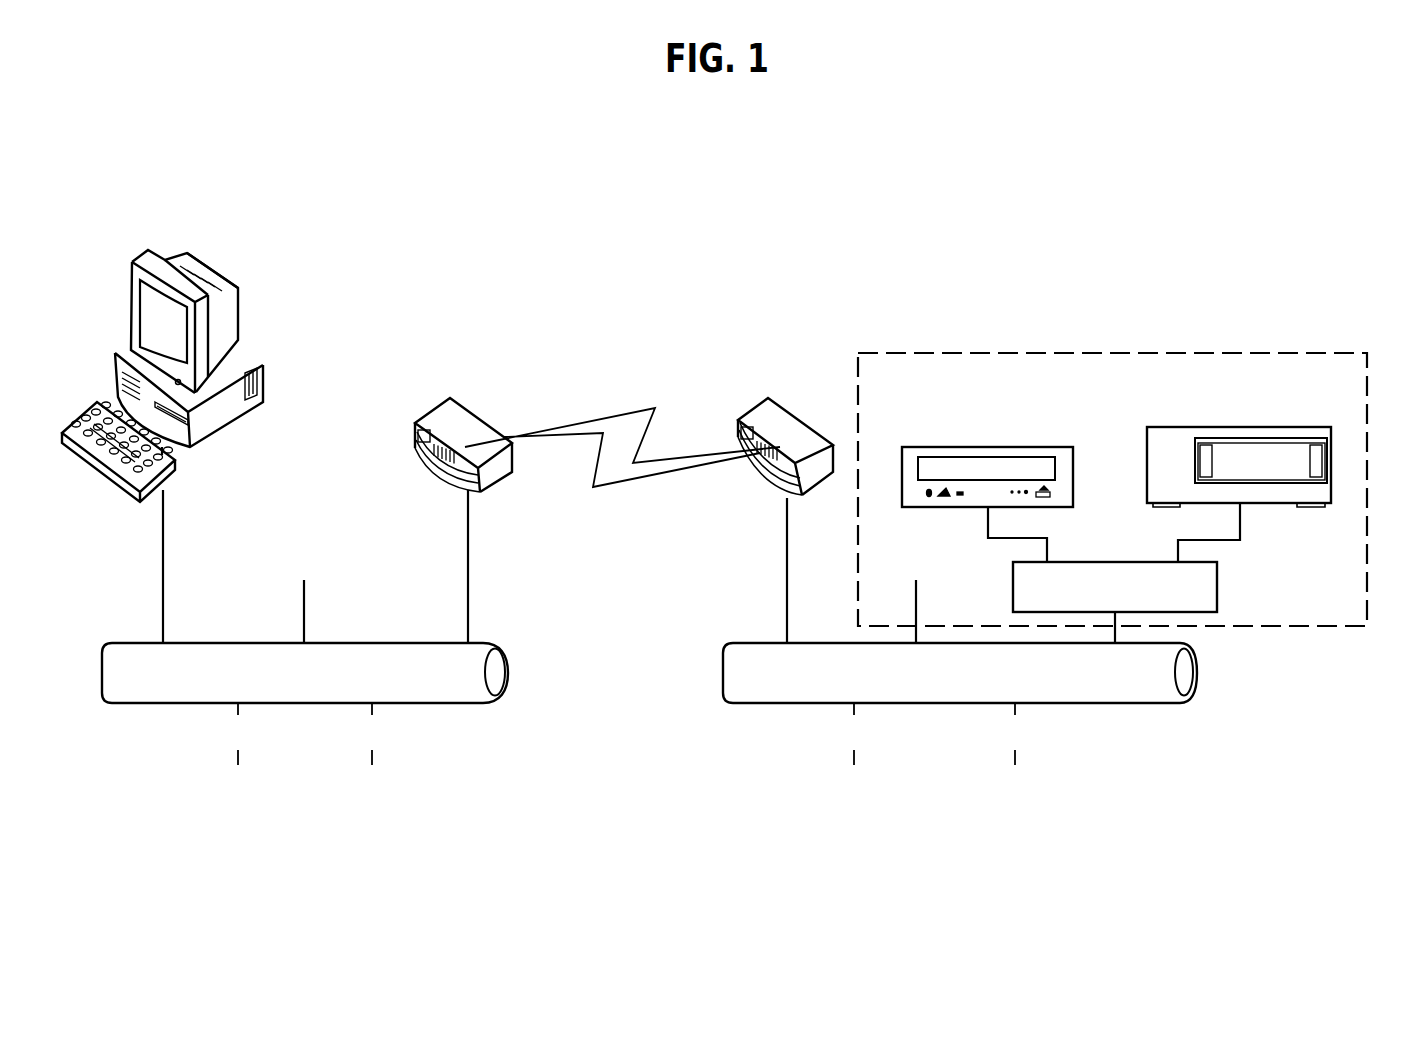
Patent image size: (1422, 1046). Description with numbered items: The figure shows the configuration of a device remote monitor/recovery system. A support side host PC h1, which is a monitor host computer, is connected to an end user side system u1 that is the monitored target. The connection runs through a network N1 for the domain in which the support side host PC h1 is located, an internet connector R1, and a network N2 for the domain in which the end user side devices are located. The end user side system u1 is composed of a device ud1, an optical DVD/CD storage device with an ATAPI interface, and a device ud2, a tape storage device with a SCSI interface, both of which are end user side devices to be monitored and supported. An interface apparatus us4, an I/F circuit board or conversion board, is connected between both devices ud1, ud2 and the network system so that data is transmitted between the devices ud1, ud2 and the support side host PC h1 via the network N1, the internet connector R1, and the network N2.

The support side host PC h1 is at (232, 318).
The internet connector R1 is at (473, 425).
The end user side system u1 is at (1363, 352).
The device (storage) ud1 is at (1074, 475).
The device (storage) ud2 is at (1287, 507).
The interface apparatus us4 is at (1217, 585).
The network N1 is at (472, 705).
The network N2 is at (1147, 705).